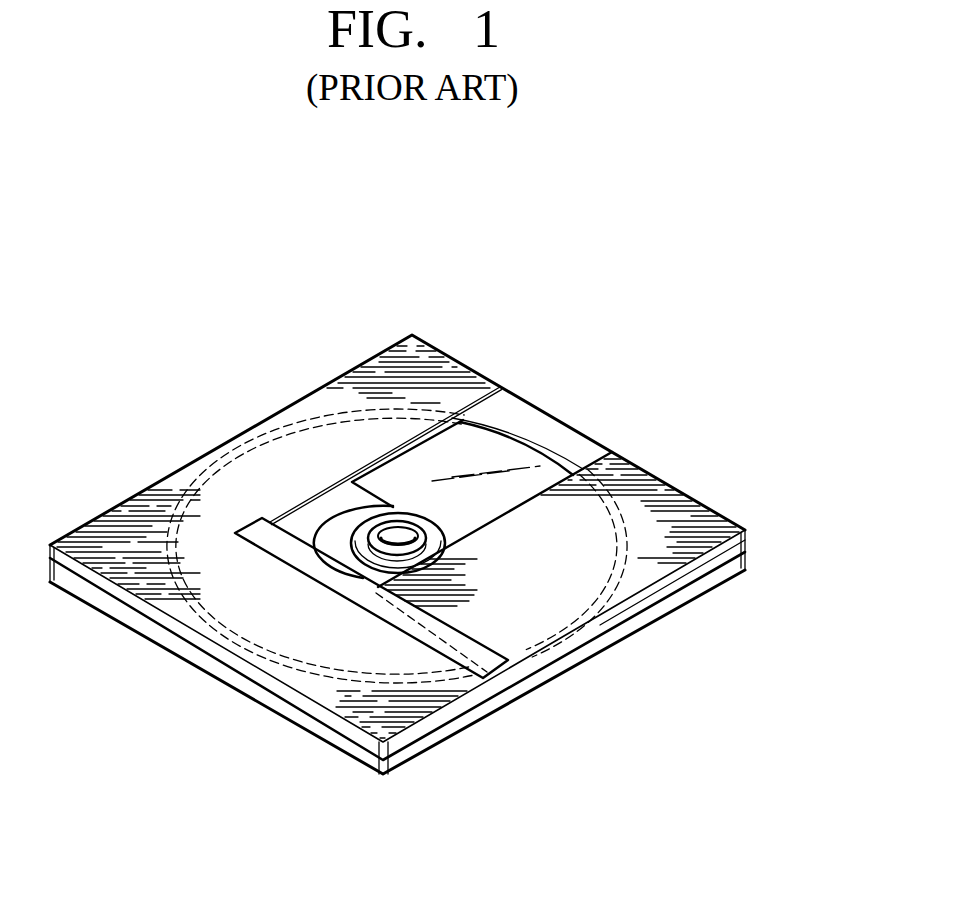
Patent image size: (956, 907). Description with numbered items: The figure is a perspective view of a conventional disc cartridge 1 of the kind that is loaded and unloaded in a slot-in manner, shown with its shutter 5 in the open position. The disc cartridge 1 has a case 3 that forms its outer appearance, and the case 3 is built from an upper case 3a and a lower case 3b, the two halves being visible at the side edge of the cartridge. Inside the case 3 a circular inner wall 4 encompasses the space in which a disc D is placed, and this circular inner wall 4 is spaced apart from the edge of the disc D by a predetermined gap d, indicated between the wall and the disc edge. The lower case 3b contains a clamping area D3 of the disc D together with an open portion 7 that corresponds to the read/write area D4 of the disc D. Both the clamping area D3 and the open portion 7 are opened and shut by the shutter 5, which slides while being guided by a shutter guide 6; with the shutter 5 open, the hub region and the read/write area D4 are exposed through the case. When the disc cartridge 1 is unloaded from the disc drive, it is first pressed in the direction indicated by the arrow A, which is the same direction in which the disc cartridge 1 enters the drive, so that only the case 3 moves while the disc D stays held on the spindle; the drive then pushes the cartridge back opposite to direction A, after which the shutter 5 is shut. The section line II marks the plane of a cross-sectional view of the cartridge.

The disc cartridge 1 is at (192, 395).
The case 3 is at (819, 515).
The upper case 3a is at (747, 561).
The lower case 3b is at (746, 546).
The circular inner wall 4 is at (625, 518).
The shutter 5 is at (628, 475).
The shutter guide 6 is at (300, 571).
The open portion 7 is at (514, 416).
The disc D is at (410, 468).
The gap d is at (262, 467).
The clamping area D3 is at (445, 547).
The read/write area D4 is at (510, 490).
The direction A is at (666, 663).
The section line II-II' II is at (173, 663).